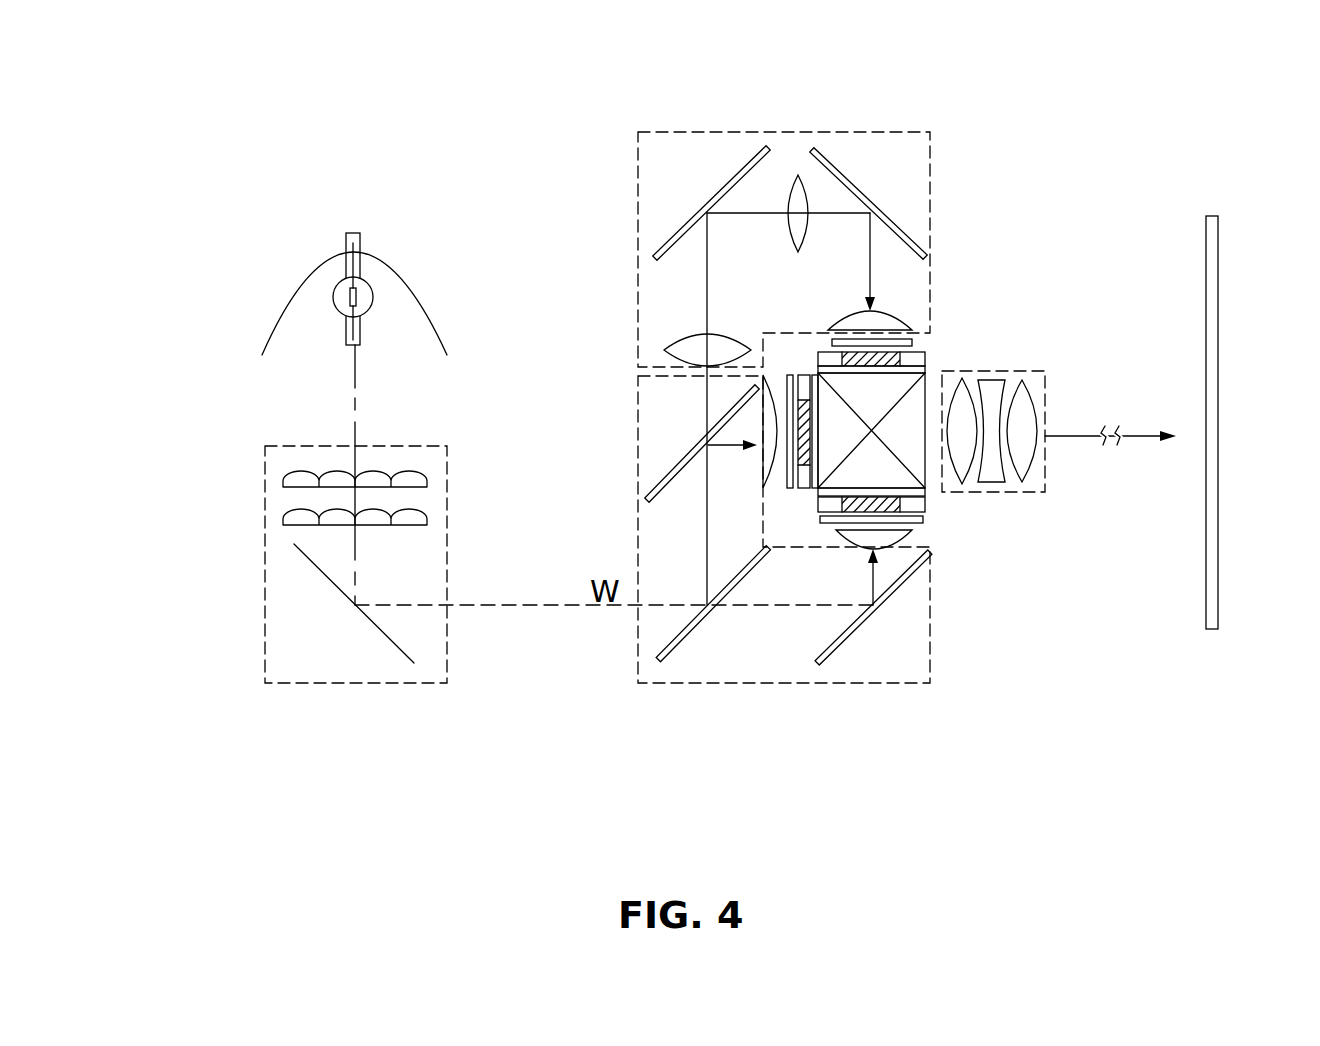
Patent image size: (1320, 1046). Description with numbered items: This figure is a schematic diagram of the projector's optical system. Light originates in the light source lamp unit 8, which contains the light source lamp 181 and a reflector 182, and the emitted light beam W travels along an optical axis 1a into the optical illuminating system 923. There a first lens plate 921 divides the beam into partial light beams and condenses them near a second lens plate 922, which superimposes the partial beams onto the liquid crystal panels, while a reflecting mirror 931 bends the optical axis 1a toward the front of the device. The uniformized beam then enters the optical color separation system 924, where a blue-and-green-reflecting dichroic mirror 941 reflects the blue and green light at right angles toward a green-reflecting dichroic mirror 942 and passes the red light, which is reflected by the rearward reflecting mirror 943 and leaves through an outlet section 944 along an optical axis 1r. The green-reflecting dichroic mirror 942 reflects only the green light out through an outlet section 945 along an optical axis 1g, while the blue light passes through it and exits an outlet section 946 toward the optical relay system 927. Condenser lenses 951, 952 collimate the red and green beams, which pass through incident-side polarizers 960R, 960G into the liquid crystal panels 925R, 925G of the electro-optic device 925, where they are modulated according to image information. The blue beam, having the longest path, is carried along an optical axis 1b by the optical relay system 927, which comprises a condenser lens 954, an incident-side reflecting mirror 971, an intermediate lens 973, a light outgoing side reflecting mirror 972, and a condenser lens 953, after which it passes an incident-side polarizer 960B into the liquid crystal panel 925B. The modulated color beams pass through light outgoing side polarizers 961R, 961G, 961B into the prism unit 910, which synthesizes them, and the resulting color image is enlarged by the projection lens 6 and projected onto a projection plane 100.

The light source lamp unit 8 is at (337, 265).
The light source lamp 181 is at (335, 292).
The reflector 182 is at (395, 262).
The optical axis 1a is at (335, 432).
The first lens plate 921 is at (283, 483).
The second lens plate 922 is at (283, 527).
The optical illuminating system 923 is at (299, 564).
The reflecting mirror 931 is at (354, 603).
The optical relay system 927 is at (777, 332).
The incident-side reflecting mirror 971 is at (680, 240).
The light outgoing side reflecting mirror 972 is at (850, 175).
The intermediate lens 973 is at (797, 175).
The optical axis 1b is at (773, 212).
The condenser lens 954 is at (688, 333).
The outlet section 946 is at (660, 376).
The incident-side polarizer 960G is at (787, 410).
The optical axis 1g is at (730, 445).
The green-reflecting dichroic mirror 942 is at (673, 460).
The condenser lens 952 is at (772, 385).
The liquid crystal panel 925G is at (803, 375).
The outlet section 945 is at (758, 462).
The light outgoing side polarizer 961G is at (808, 525).
The electro-optic device 925 is at (701, 521).
The optical axis 1r is at (815, 662).
The optical color separation system 924 is at (837, 569).
The blue-and-green-reflecting dichroic mirror 941 is at (673, 653).
The reflecting mirror 943 is at (830, 660).
The outlet section 944 is at (893, 543).
The condenser lens 951 is at (908, 533).
The prism unit 910 is at (923, 365).
The light outgoing side polarizer 961B is at (925, 372).
The liquid crystal panel 925B is at (918, 352).
The incident-side polarizer 960B is at (913, 340).
The condenser lens 953 is at (895, 313).
The light outgoing side polarizer 961R is at (925, 492).
The liquid crystal panel 925R is at (926, 508).
The incident-side polarizer 960R is at (924, 522).
The projection lens 6 is at (1048, 371).
The projection plane 100 is at (1218, 292).